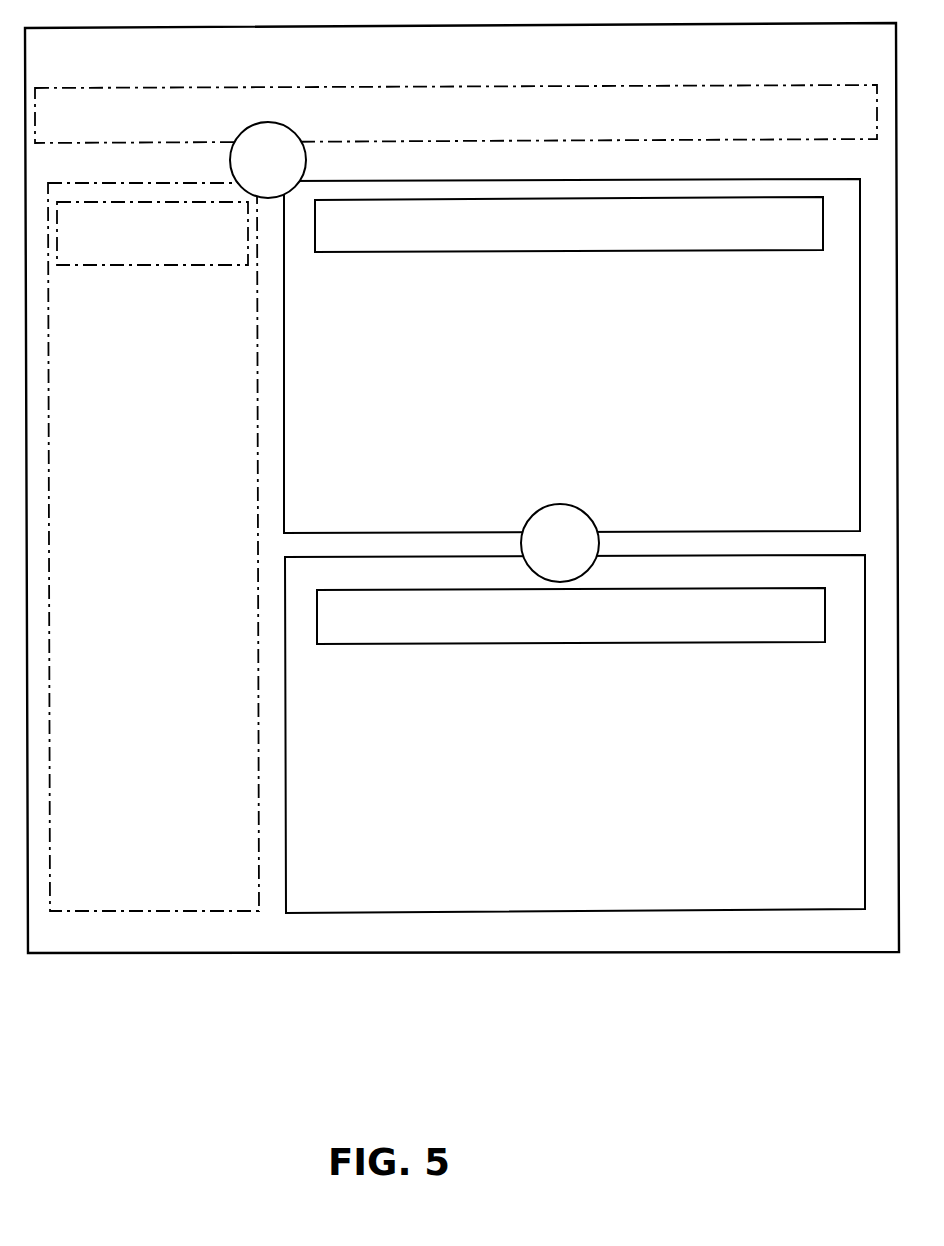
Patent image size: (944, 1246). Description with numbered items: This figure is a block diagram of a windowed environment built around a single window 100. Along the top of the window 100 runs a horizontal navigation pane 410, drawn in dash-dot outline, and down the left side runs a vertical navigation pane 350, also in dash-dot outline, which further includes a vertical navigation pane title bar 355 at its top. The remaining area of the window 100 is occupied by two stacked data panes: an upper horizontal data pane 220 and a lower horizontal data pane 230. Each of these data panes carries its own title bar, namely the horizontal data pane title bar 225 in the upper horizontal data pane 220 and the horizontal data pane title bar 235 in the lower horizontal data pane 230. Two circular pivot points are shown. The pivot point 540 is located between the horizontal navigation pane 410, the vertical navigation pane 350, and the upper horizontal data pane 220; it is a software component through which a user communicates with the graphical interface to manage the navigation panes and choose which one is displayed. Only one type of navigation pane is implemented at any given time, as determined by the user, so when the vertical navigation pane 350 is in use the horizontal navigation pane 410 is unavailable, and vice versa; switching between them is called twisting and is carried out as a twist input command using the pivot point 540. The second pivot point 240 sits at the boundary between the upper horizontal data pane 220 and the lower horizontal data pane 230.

The window 100 is at (462, 488).
The horizontal navigation pane 410 is at (456, 114).
The vertical navigation pane 350 is at (153, 547).
The vertical navigation pane title bar 355 is at (152, 233).
The upper horizontal data pane 220 is at (572, 356).
The horizontal data pane title bar 225 is at (569, 224).
The lower horizontal data pane 230 is at (575, 734).
The horizontal data pane title bar 235 is at (571, 616).
The pivot point 540 is at (268, 160).
The pivot point 240 is at (560, 543).